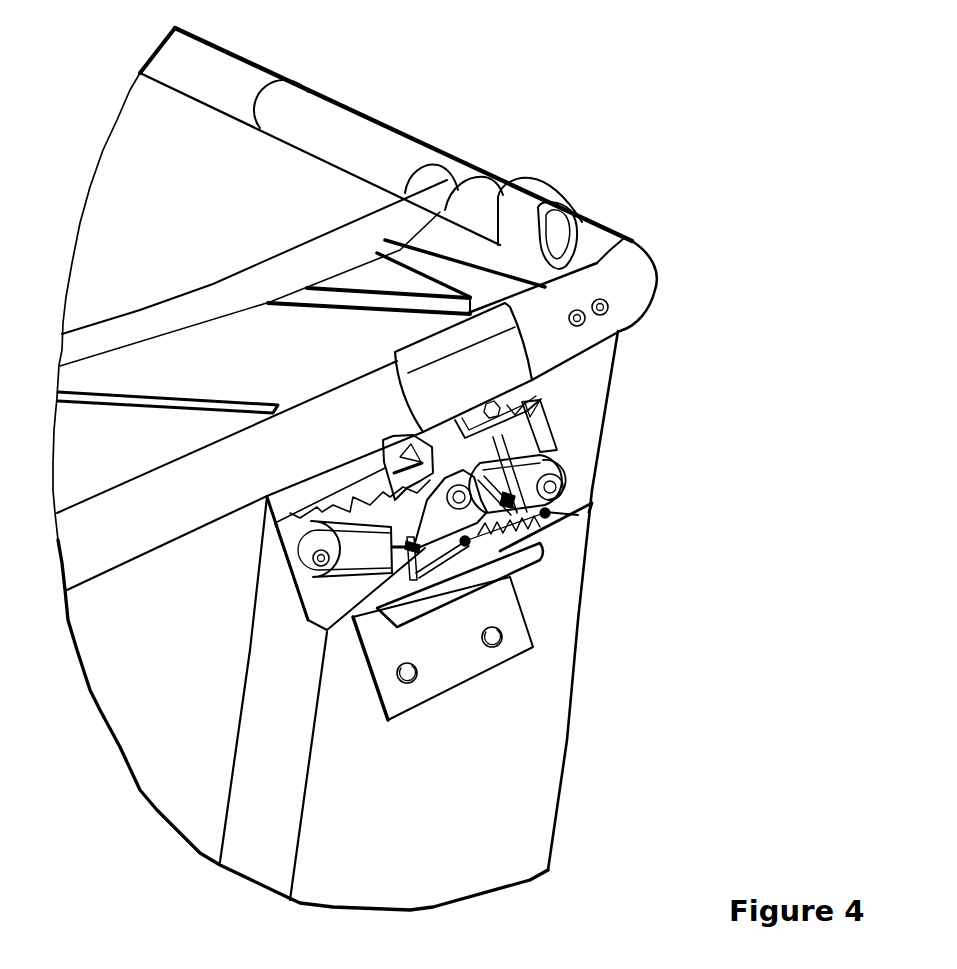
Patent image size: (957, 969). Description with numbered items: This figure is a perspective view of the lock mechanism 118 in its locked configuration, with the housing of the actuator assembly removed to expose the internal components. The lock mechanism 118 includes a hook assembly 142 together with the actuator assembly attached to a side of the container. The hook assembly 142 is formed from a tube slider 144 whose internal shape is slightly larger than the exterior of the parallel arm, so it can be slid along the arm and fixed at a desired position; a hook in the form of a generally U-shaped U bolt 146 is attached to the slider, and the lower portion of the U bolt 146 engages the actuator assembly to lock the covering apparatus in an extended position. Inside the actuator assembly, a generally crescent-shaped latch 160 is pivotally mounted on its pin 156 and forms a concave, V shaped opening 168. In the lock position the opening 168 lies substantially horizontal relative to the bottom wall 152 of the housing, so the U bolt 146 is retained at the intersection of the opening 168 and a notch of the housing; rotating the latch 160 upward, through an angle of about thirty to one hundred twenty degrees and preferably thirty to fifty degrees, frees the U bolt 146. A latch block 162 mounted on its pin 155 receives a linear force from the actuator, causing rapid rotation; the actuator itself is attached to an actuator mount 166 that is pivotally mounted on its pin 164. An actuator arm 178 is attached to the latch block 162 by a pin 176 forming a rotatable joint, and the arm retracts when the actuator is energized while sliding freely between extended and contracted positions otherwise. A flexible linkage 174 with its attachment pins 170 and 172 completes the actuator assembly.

The lock mechanism 118 is at (738, 548).
The hook assembly 142 is at (554, 308).
The tube slider 144 is at (513, 363).
The U bolt 146 is at (561, 457).
The bottom wall 152 is at (570, 515).
The pin 155 is at (407, 443).
The pin 156 is at (563, 493).
The latch 160 is at (561, 472).
The latch block 162 is at (380, 608).
The pin 164 is at (333, 530).
The actuator mount 166 is at (316, 546).
The V shaped opening 168 is at (500, 519).
The attachment pin 170 is at (557, 530).
The attachment pin 172 is at (466, 546).
The flexible linkage 174 is at (546, 516).
The pin 176 is at (325, 636).
The actuator arm 178 is at (412, 546).